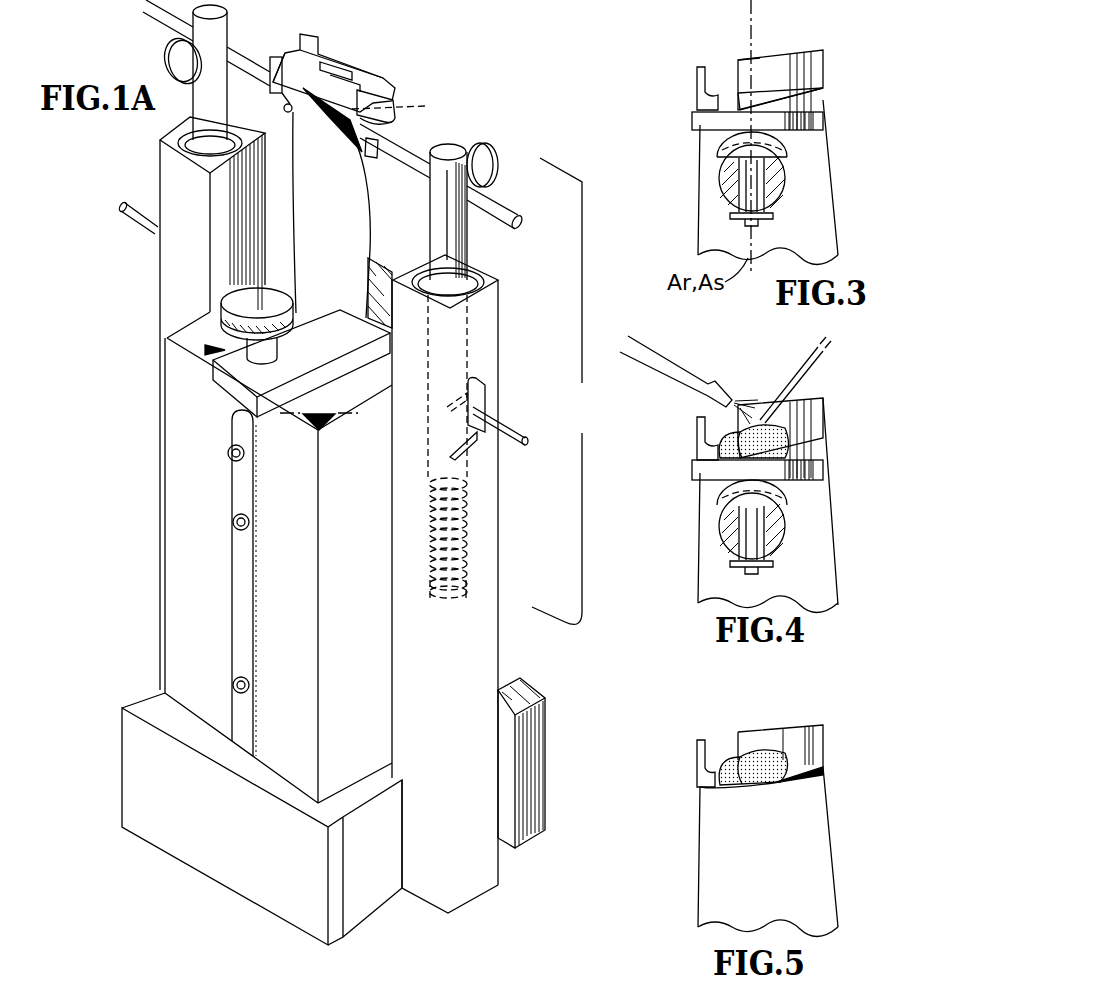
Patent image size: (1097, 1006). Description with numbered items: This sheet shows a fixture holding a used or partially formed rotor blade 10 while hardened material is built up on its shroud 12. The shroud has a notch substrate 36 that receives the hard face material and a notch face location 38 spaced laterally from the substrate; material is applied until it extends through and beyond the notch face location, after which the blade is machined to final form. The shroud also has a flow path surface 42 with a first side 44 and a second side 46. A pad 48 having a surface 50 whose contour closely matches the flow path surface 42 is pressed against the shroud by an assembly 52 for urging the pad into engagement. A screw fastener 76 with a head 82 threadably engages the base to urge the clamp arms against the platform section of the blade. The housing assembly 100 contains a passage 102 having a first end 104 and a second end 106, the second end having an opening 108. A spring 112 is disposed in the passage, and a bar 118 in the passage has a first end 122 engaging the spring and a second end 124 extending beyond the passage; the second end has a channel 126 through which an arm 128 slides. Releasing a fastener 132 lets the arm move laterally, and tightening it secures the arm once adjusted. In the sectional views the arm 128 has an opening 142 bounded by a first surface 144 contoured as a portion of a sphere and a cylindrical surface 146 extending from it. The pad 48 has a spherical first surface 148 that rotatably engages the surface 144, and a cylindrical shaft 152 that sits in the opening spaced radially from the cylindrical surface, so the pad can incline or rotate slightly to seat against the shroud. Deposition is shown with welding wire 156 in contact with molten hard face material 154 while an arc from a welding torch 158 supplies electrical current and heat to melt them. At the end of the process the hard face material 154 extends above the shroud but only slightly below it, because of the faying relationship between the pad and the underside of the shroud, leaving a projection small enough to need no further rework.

In FIG. 1A, the rotor blade 10 is at (343, 251).
In FIG. 3, the rotor blade 10 is at (803, 251).
In FIG. 4, the rotor blade 10 is at (813, 585).
In FIG. 5, the rotor blade 10 is at (778, 866).
In FIG. 3, the shroud 12 is at (740, 60).
In FIG. 5, the shroud 12 is at (802, 724).
In FIG. 1A, the notch substrate 36 is at (390, 97).
In FIG. 1A, the notch face location 38 is at (403, 107).
In FIG. 1A, the flow path surface 42 is at (305, 72).
In FIG. 3, the flow path surface 42 is at (823, 98).
In FIG. 1A, the first side 44 is at (277, 57).
In FIG. 1A, the second side 46 is at (347, 80).
In FIG. 1A, the pad 48 is at (349, 137).
In FIG. 3, the pad 48 is at (695, 118).
In FIG. 1A, the surface 50 is at (388, 120).
In FIG. 3, the surface 50 is at (762, 60).
In FIG. 1A, the assembly 52 is at (561, 391).
In FIG. 3, the assembly 52 is at (787, 181).
In FIG. 1A, the screw fastener 76 is at (205, 352).
In FIG. 1A, the head 82 is at (242, 307).
In FIG. 1A, the fixture 100 is at (262, 849).
In FIG. 1A, the passage 102 is at (468, 350).
In FIG. 1A, the first end 104 is at (458, 596).
In FIG. 1A, the second end 106 is at (470, 292).
In FIG. 1A, the opening 108 is at (483, 262).
In FIG. 1A, the spring 112 is at (465, 545).
In FIG. 1A, the bar 118 is at (448, 240).
In FIG. 1A, the first end 122 is at (476, 482).
In FIG. 1A, the second end 124 is at (450, 148).
In FIG. 1A, the channel 126 is at (450, 195).
In FIG. 1A, the arm 128 is at (505, 207).
In FIG. 1A, the fastener 132 is at (492, 152).
In FIG. 3, the opening 142 is at (713, 183).
In FIG. 3, the first surface 144 is at (787, 163).
In FIG. 3, the cylindrical surface 146 is at (773, 188).
In FIG. 3, the first surface 148 is at (783, 137).
In FIG. 3, the cylindrical shaft 152 is at (743, 197).
In FIG. 4, the hard face material 154 is at (783, 438).
In FIG. 5, the hard face material 154 is at (780, 767).
In FIG. 4, the welding wire 156 is at (810, 367).
In FIG. 4, the welding torch 158 is at (673, 368).